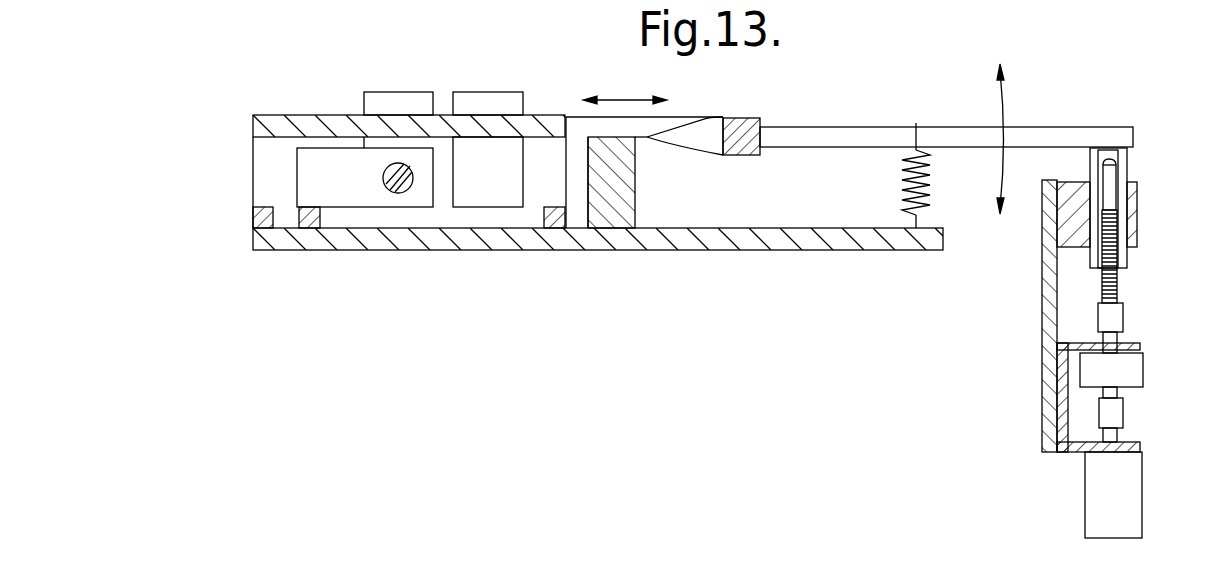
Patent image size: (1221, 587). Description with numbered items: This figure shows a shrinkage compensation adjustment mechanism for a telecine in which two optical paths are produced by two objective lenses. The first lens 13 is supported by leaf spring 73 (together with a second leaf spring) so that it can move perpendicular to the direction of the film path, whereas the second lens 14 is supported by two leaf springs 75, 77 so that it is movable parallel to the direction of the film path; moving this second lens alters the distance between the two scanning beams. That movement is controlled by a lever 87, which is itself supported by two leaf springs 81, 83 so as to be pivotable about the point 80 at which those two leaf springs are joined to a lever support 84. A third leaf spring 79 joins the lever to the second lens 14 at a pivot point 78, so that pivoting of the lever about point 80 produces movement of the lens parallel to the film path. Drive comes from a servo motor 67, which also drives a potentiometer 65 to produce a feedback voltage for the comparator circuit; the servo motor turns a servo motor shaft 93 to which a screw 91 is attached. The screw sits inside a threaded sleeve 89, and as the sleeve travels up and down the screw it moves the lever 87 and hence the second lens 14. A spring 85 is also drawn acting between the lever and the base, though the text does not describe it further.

The first lens 13 is at (364, 96).
The second lens 14 is at (500, 92).
The potentiometer 65 is at (1143, 370).
The servo motor 67 is at (1142, 505).
The leaf spring 73 is at (380, 207).
The leaf spring 75 is at (253, 188).
The leaf spring 77 is at (573, 187).
The pivot point 78 is at (566, 118).
The third leaf spring 79 is at (688, 117).
The pivot point 80 is at (640, 140).
The leaf spring 81 is at (689, 148).
The leaf spring 83 is at (712, 156).
The lever support 84 is at (621, 212).
The spring 85 is at (902, 215).
The lever 87 is at (877, 127).
The threaded sleeve 89 is at (1128, 166).
The screw 91 is at (1118, 290).
The servo motor shaft 93 is at (1123, 340).